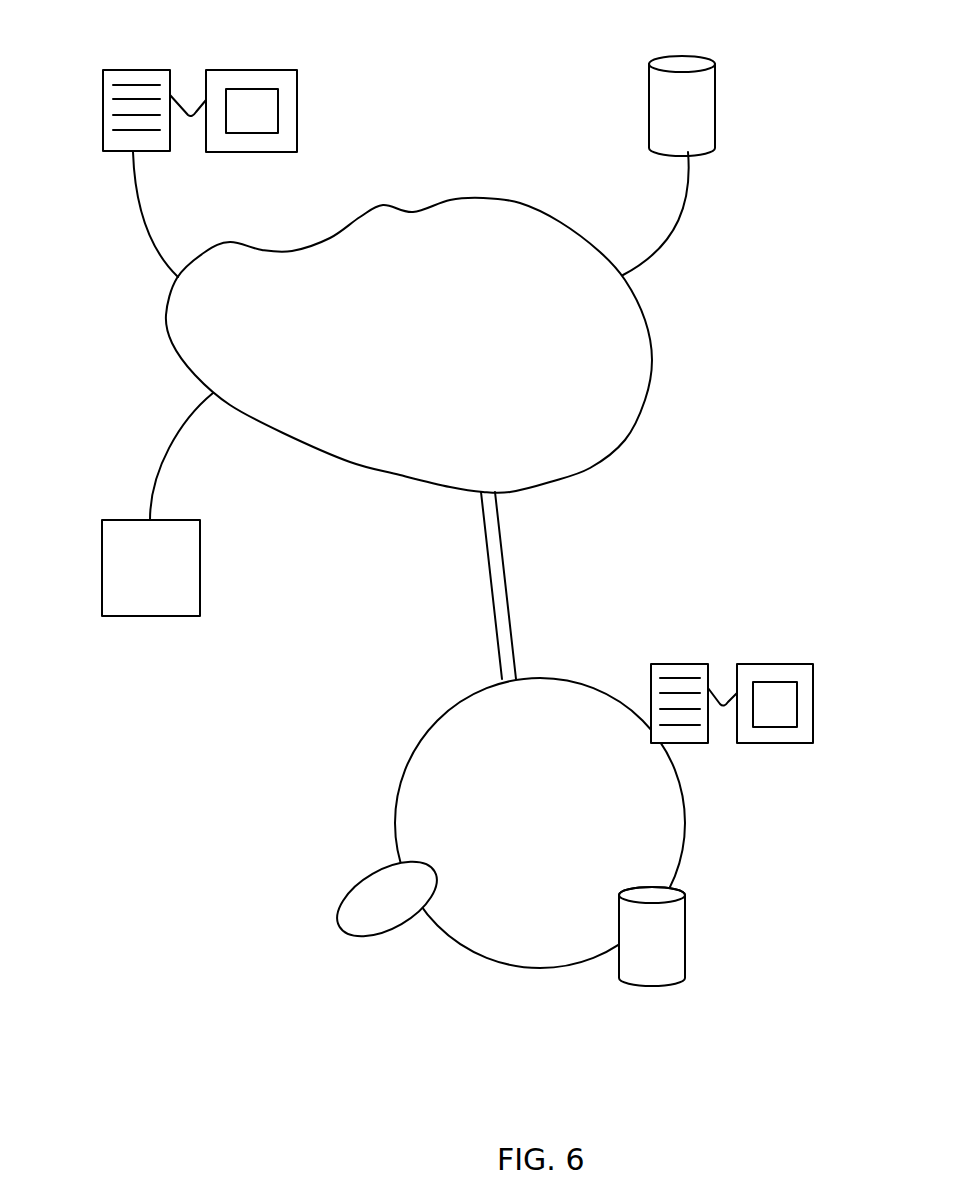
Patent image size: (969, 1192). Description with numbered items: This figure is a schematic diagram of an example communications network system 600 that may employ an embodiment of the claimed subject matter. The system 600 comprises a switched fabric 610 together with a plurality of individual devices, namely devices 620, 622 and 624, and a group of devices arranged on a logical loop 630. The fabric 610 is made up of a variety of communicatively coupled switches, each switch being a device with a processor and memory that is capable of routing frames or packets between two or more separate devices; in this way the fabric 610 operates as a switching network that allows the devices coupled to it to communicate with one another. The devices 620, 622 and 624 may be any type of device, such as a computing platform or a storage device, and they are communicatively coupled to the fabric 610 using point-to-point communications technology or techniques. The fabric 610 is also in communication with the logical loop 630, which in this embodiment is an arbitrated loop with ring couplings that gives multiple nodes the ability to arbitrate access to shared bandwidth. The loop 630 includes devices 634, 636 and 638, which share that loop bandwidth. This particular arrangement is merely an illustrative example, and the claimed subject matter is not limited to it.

The communications network system 600 is at (213, 1102).
The switched fabric 610 is at (409, 345).
The device 620 is at (133, 70).
The device 622 is at (147, 616).
The device 624 is at (715, 108).
The logical loop 630 is at (404, 747).
The device 634 is at (348, 937).
The device 636 is at (652, 982).
The device 638 is at (680, 664).